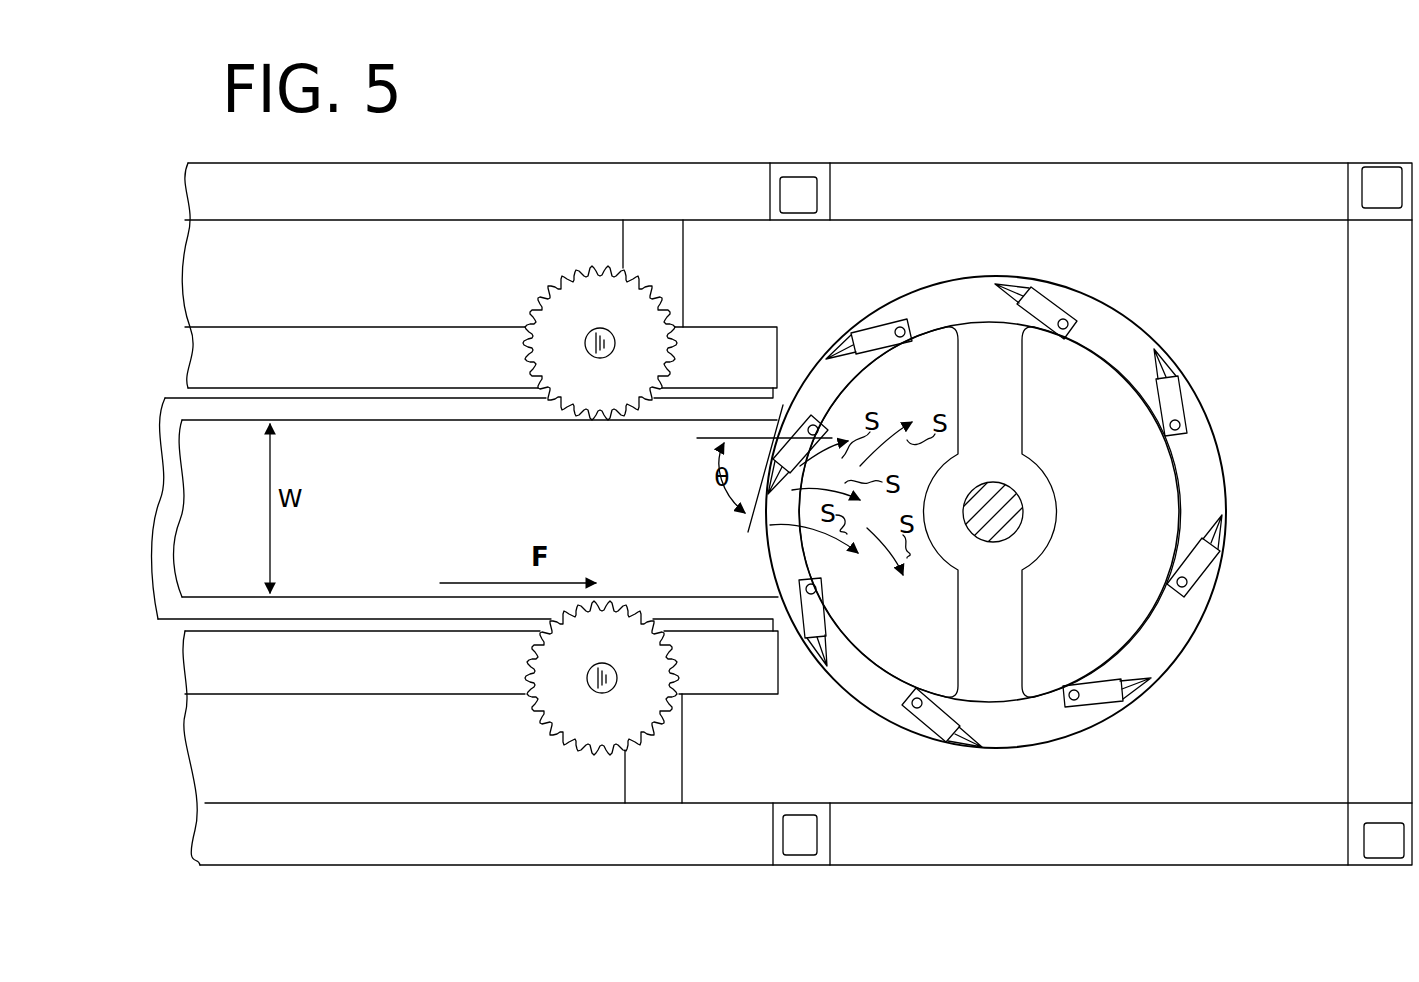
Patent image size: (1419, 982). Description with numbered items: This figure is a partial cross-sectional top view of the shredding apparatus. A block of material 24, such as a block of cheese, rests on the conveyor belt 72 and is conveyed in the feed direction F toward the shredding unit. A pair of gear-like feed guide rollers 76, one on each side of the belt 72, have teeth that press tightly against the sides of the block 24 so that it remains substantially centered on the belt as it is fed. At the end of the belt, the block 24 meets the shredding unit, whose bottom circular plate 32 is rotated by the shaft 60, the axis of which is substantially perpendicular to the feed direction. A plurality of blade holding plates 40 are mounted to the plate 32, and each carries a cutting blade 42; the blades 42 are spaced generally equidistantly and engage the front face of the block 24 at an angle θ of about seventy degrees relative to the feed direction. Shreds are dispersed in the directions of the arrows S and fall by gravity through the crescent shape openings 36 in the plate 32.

The block of material 24 is at (440, 516).
The bottom circular plate 32 is at (1030, 722).
The crescent shape openings 36 is at (1085, 385).
The blade holding plate 40 is at (1172, 394).
The cutting blade 42 is at (1218, 540).
The shaft 60 is at (1025, 508).
The conveyor belt 72 is at (176, 397).
The feed guide roller 76 is at (565, 300).